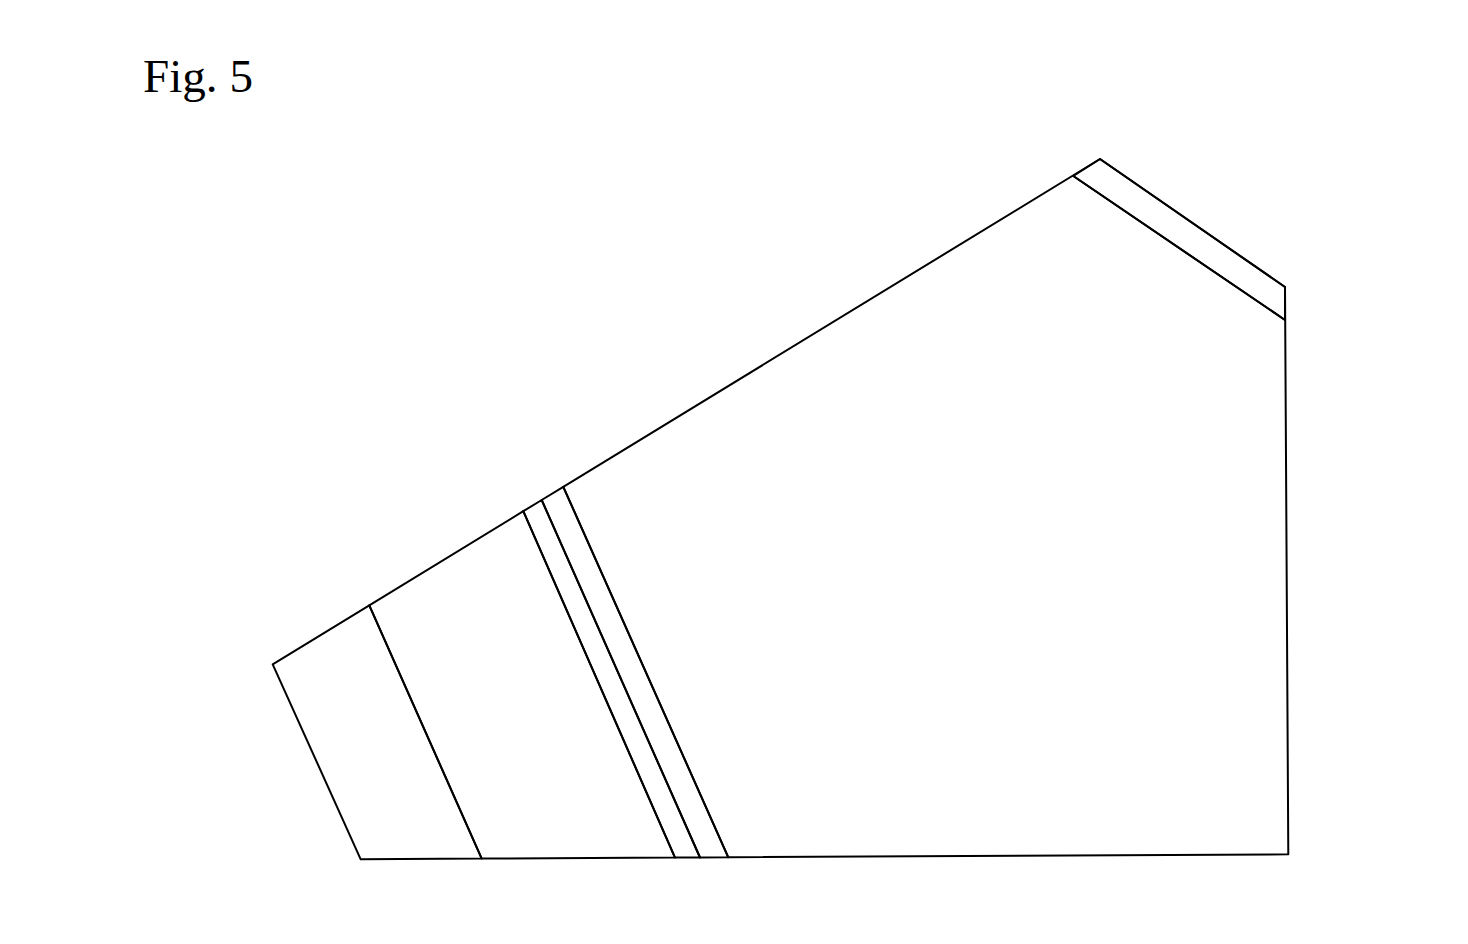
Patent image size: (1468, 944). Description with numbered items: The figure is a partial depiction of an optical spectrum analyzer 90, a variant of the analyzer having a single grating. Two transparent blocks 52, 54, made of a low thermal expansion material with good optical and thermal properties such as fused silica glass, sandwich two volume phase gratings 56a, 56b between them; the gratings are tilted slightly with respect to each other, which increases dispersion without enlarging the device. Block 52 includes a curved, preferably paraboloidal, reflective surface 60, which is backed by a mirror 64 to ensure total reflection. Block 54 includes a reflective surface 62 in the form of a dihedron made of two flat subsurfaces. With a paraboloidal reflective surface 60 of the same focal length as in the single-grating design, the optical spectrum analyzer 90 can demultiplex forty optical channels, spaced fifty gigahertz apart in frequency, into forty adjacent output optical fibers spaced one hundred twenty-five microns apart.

The transparent block 52 is at (936, 562).
The transparent block 54 is at (475, 710).
The volume phase grating 56a is at (541, 530).
The volume phase grating 56b is at (563, 509).
The curved reflective surface 60 is at (1152, 230).
The reflective surface 62 is at (372, 762).
The mirror 64 is at (1183, 213).
The optical spectrum analyzer 90 is at (1369, 131).